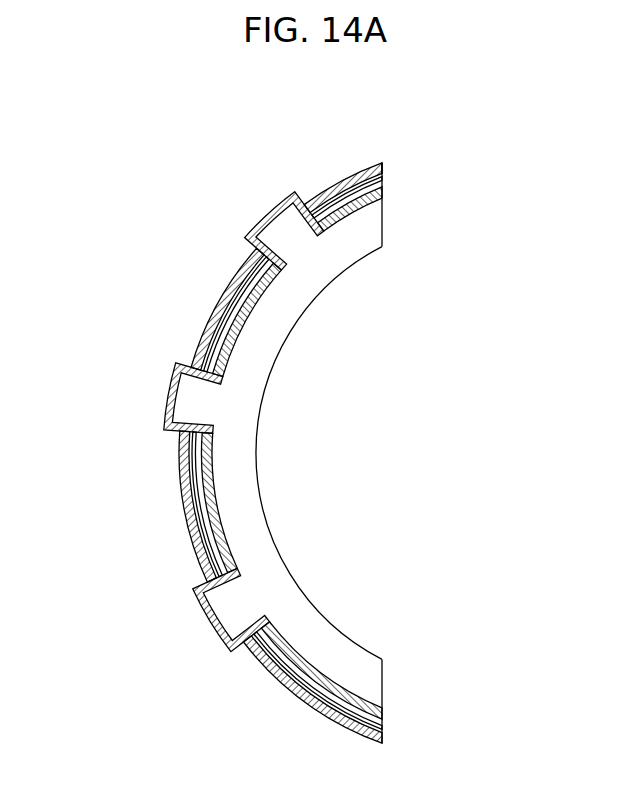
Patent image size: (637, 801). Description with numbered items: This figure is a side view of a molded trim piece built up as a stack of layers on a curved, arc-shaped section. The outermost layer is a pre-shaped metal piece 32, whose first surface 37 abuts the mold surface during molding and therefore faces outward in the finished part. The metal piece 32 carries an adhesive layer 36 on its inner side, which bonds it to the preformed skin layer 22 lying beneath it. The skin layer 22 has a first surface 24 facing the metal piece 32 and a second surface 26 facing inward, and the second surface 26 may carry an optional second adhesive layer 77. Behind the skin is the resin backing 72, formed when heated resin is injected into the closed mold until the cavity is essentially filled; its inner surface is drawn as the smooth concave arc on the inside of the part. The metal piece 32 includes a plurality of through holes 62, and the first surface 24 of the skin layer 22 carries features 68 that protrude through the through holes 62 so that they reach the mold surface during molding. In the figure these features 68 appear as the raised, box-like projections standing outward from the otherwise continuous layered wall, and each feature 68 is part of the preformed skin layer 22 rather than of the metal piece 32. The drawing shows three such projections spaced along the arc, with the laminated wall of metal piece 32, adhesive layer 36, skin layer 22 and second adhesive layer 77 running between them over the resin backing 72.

The preformed skin layer 22 is at (385, 185).
The first surface 24 is at (381, 728).
The second surface 26 is at (382, 710).
The pre-shaped metal piece 32 is at (385, 165).
The adhesive layer 36 is at (385, 177).
The first surface 37 is at (372, 160).
The through holes 62 is at (305, 200).
The features 68 is at (257, 221).
The resin backing 72 is at (316, 601).
The second adhesive layer 77 is at (385, 193).